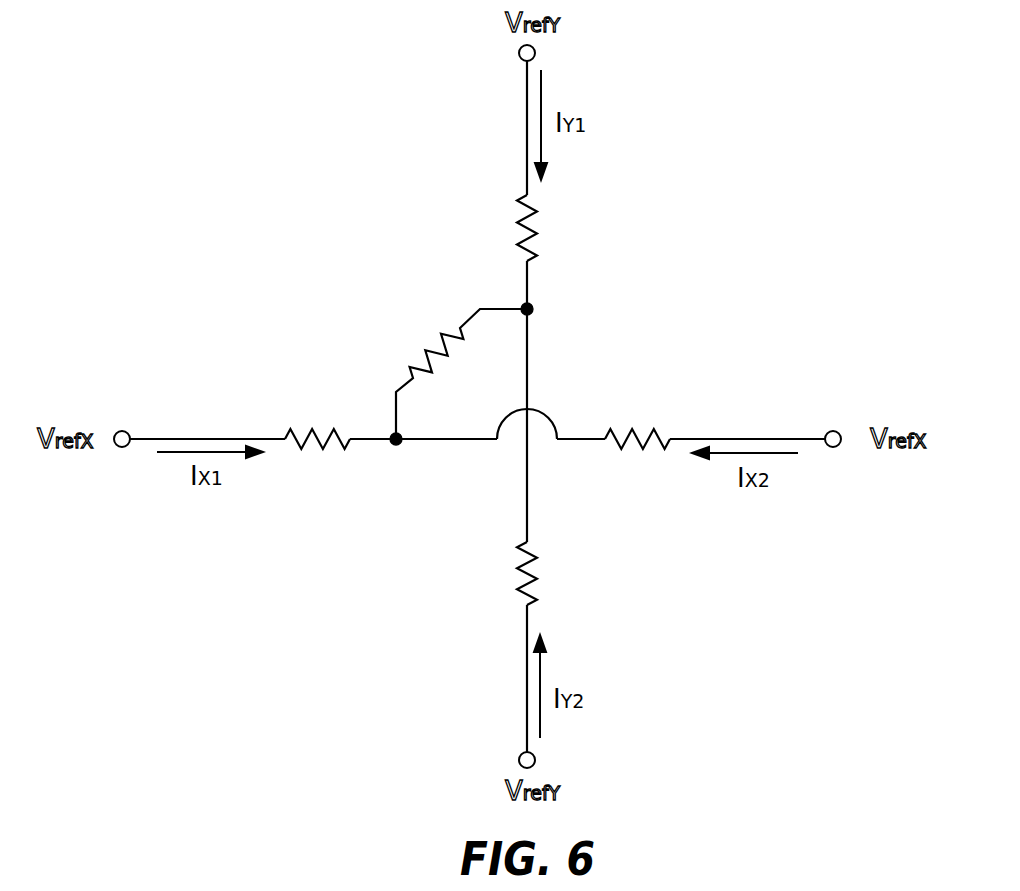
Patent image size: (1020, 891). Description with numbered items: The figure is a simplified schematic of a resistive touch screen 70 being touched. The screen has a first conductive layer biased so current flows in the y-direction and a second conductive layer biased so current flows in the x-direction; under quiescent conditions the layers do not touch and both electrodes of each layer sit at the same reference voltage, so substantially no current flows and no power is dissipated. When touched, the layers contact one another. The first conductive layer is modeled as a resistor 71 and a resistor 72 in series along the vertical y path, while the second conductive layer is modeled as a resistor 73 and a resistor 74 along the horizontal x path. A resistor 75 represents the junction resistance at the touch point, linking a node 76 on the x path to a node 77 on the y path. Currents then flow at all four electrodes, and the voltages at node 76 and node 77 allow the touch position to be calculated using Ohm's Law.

The resistive touch screen 70 is at (751, 208).
The resistor 71 is at (540, 221).
The resistor 72 is at (540, 566).
The resistor 73 is at (323, 430).
The resistor 74 is at (633, 430).
The resistor 75 is at (437, 353).
The node 76 is at (396, 449).
The node 77 is at (537, 309).